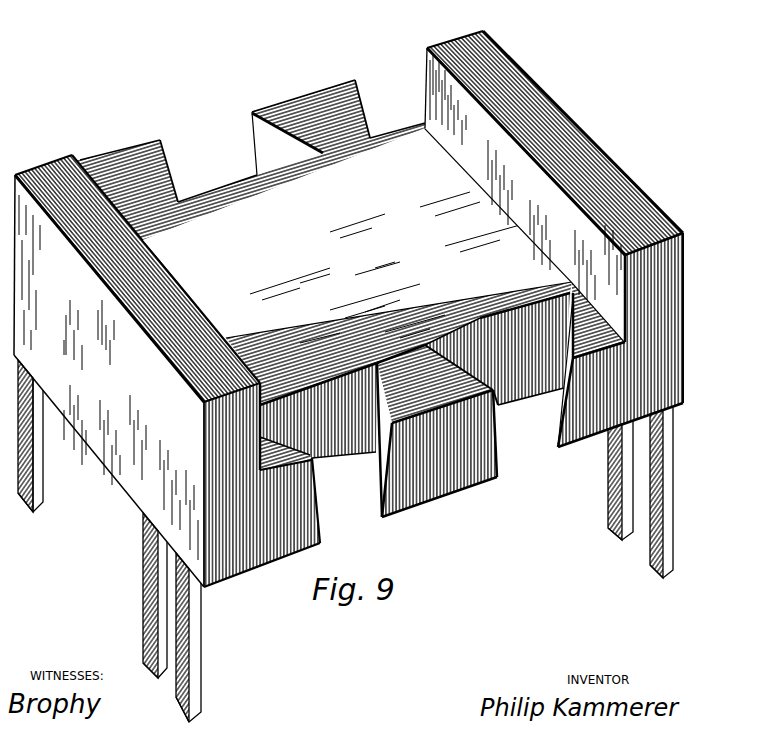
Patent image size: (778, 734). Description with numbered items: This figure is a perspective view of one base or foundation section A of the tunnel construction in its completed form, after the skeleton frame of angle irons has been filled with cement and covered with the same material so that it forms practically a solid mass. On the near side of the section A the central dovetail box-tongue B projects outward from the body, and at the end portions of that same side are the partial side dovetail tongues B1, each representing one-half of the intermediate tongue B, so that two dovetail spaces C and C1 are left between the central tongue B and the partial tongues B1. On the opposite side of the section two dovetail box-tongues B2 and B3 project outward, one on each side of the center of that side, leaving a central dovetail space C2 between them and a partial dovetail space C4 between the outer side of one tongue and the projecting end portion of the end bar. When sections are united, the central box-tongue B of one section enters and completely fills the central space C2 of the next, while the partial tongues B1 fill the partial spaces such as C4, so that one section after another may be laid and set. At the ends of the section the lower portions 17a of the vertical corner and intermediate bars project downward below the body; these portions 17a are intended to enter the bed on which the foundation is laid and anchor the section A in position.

The base or foundation section A is at (357, 235).
The central dovetail box-tongue B is at (457, 485).
The partial side dovetail tongue B1 is at (607, 430).
The dovetail skeleton box-tongue B2 is at (128, 150).
The dovetail skeleton box-tongue B3 is at (322, 90).
The dovetail space C is at (535, 370).
The dovetail space C1 is at (347, 497).
The central dovetail space C2 is at (217, 171).
The partial dovetail space C4 is at (397, 109).
The downwardly-projecting portions of vertical bars 17a is at (43, 465).